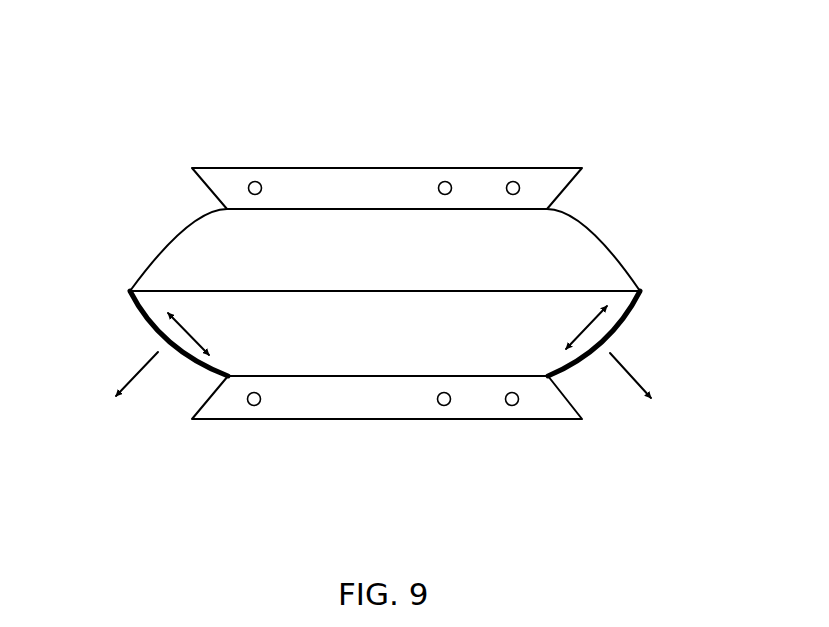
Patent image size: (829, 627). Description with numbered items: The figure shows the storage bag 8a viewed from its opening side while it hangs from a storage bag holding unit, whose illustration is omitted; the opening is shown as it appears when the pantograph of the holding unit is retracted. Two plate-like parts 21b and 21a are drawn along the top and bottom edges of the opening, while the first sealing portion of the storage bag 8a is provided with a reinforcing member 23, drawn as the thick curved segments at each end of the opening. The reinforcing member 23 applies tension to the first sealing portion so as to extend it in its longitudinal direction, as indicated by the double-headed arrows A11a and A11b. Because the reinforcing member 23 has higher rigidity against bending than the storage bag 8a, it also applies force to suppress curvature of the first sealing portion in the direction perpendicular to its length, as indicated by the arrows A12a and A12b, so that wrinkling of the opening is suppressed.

The storage bag 8a is at (305, 62).
The upper plate 21b is at (373, 167).
The lower plate 21a is at (378, 422).
The reinforcing member 23 is at (193, 365).
The double-headed arrow A11a is at (176, 297).
The double-headed arrow A11b is at (586, 315).
The arrow A12a is at (127, 382).
The arrow A12b is at (690, 385).